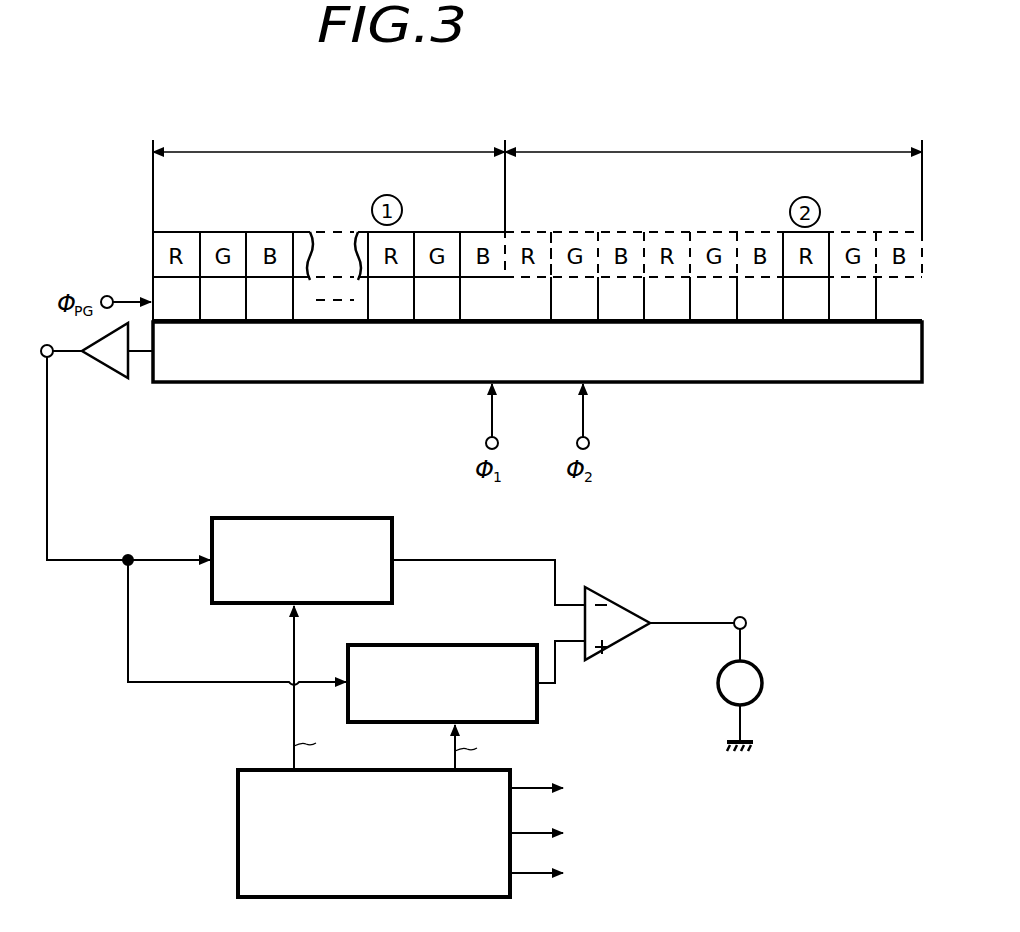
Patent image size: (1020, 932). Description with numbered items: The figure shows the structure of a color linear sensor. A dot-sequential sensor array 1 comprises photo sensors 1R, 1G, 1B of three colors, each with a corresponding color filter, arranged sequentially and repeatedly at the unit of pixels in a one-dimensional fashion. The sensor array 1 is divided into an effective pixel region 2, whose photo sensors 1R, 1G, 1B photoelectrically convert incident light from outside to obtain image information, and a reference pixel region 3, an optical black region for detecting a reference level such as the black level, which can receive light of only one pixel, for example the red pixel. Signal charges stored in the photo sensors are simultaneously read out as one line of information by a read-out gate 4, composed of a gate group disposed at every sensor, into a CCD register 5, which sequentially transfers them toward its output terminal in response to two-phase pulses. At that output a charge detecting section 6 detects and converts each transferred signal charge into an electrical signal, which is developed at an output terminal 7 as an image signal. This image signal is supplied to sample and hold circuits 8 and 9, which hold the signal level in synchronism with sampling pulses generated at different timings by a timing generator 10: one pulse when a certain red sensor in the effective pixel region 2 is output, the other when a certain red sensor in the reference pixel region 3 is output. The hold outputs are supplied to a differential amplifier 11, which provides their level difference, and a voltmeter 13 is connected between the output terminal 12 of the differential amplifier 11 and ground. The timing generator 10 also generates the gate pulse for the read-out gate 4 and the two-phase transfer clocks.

The dot-sequential sensor array 1 is at (512, 231).
The photo sensor 1R is at (175, 238).
The photo sensor 1G is at (224, 238).
The photo sensor 1B is at (272, 238).
The effective pixel region 2 is at (346, 152).
The reference pixel region 3 is at (678, 152).
The read-out gate 4 is at (146, 283).
The CCD register 5 is at (830, 383).
The charge detecting section 6 is at (130, 373).
The output terminal 7 is at (52, 356).
The sample and hold circuit 8 is at (299, 516).
The sample and hold circuit 9 is at (445, 642).
The timing generator 10 is at (238, 830).
The differential amplifier 11 is at (626, 603).
The output terminal 12 is at (746, 621).
The voltmeter 13 is at (762, 683).